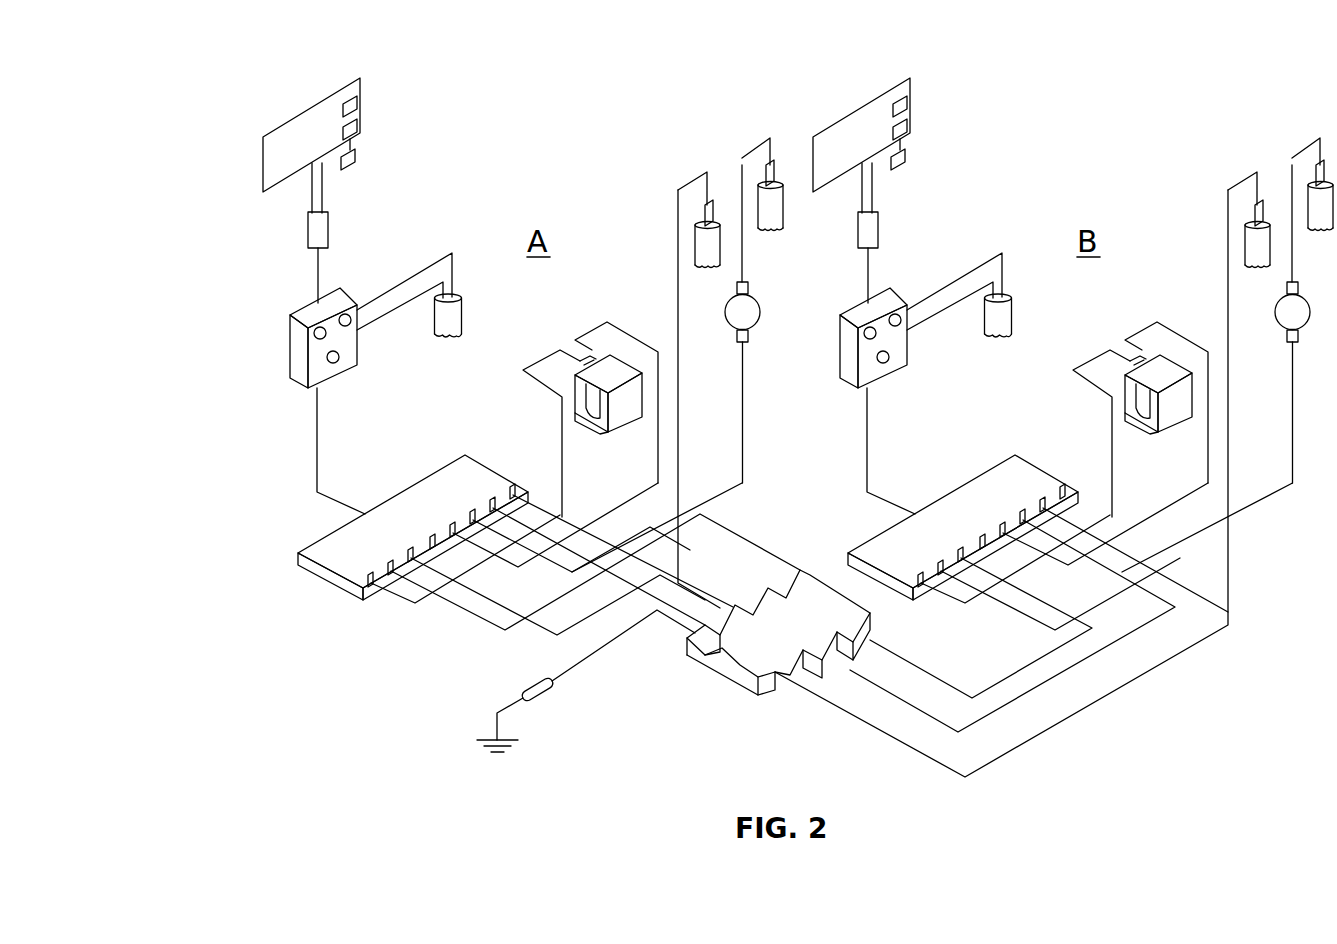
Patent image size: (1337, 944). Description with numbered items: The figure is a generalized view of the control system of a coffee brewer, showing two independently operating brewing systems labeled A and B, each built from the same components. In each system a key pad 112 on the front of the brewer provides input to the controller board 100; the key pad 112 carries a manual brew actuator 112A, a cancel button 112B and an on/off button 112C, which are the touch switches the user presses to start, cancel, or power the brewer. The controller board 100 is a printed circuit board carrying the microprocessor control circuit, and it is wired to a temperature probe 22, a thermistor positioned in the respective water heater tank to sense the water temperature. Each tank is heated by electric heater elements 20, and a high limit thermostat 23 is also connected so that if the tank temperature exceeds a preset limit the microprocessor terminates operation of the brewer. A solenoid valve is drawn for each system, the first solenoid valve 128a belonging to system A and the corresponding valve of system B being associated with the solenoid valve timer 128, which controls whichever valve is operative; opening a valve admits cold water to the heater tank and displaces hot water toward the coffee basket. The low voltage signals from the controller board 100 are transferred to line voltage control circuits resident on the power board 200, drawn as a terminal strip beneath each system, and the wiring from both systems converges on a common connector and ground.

The key pad 112 is at (326, 122).
The manual brew actuator 112A is at (360, 92).
The cancel button 112B is at (357, 128).
The on/off button 112C is at (354, 161).
The controller board 100 is at (334, 376).
The temperature probe 22 is at (444, 336).
The electric heater element 20 is at (760, 196).
The high limit thermostat 23 is at (728, 313).
The first solenoid valve 128a is at (616, 368).
The solenoid valve timer 128 is at (1166, 368).
The power board 200 is at (433, 492).